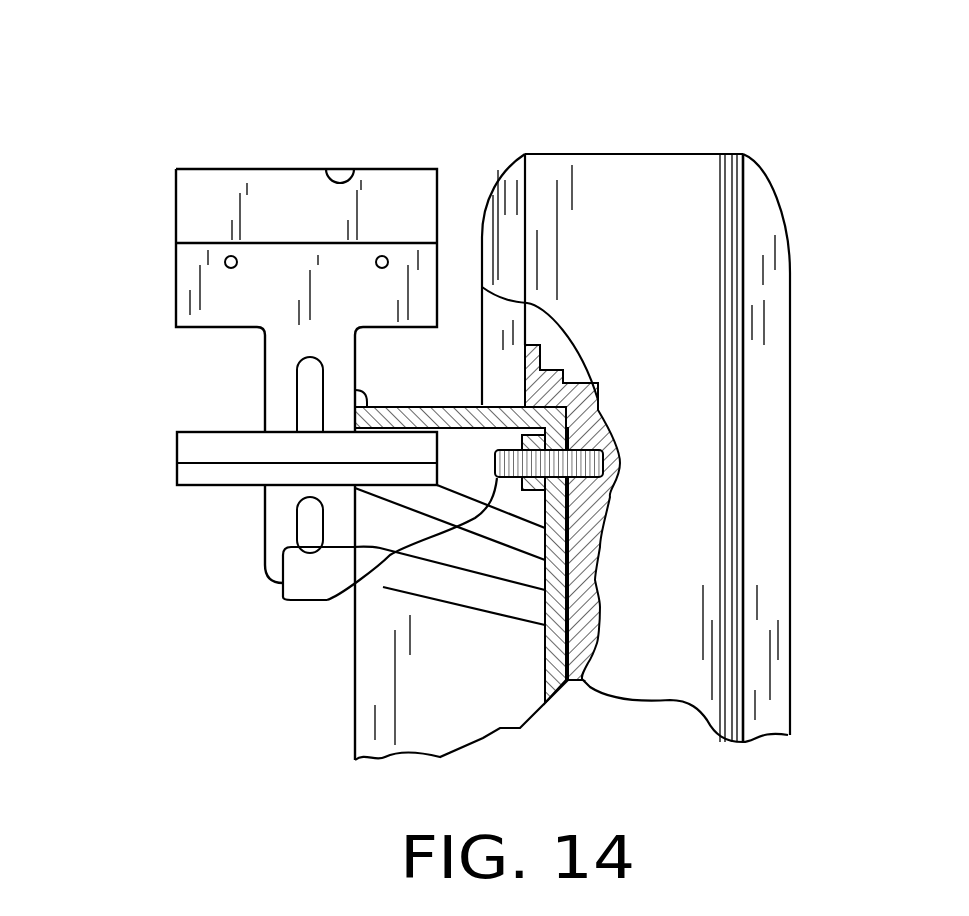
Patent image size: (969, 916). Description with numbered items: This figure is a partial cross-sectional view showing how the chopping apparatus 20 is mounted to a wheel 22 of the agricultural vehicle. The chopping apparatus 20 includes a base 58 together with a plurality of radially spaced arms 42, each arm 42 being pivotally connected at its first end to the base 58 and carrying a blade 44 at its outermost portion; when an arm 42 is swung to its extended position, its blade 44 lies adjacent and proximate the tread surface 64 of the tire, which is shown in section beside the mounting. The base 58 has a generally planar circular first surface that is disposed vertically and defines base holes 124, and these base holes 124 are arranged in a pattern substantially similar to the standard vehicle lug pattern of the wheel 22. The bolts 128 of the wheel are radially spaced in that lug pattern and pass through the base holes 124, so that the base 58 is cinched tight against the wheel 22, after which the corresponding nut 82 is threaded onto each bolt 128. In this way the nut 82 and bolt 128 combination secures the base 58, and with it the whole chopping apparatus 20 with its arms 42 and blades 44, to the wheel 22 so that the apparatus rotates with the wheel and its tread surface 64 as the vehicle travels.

The chopping apparatus 20 is at (187, 110).
The wheel 22 is at (563, 372).
The arm 42 is at (176, 293).
The blade 44 is at (352, 172).
The base 58 is at (568, 523).
The tread surface 64 is at (652, 218).
The nut 82 is at (568, 580).
The base holes 124 is at (597, 413).
The bolt 128 is at (327, 600).